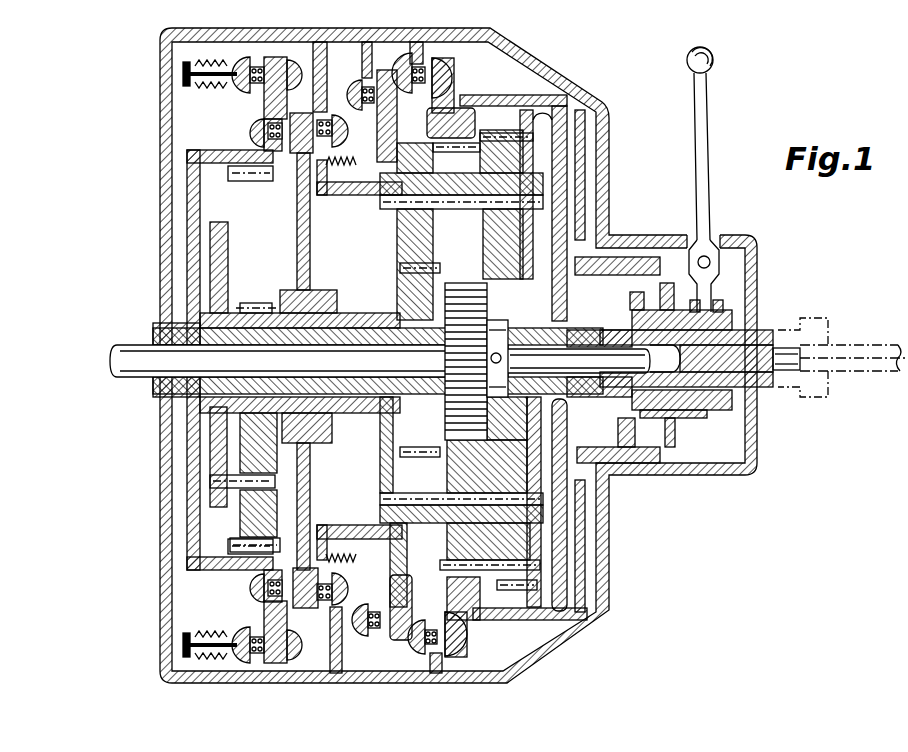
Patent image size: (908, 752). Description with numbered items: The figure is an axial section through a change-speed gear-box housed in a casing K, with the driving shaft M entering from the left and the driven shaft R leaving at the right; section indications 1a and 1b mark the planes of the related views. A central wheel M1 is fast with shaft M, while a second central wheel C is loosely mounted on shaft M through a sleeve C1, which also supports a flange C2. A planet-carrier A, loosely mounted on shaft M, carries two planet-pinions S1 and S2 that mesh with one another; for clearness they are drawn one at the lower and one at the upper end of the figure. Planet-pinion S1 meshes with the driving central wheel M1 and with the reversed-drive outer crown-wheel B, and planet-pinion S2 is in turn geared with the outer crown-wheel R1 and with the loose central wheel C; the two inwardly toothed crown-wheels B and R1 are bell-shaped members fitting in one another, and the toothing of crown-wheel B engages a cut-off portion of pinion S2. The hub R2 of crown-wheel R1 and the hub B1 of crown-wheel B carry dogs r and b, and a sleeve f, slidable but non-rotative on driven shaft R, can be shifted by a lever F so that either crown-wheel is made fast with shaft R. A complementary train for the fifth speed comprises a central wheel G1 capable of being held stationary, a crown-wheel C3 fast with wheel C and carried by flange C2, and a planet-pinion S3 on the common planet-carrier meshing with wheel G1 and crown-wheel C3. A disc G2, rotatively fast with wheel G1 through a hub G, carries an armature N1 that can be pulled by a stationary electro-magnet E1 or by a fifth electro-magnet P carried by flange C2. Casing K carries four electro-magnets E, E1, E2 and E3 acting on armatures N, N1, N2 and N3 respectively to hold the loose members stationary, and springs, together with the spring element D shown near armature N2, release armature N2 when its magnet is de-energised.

The casing K is at (545, 72).
The flange C2 is at (187, 162).
The crown-wheel C3 is at (252, 182).
The electro-magnet E is at (246, 68).
The armature N is at (294, 72).
The electro-magnet P is at (253, 125).
The armature N1 is at (298, 121).
The disc G2 is at (297, 218).
The electro-magnet E1 is at (345, 128).
The spring D is at (346, 168).
The electro-magnet E2 is at (360, 91).
The armature N2 is at (390, 72).
The armature N3 is at (447, 76).
The electro-magnet E3 is at (428, 110).
The section line 1a is at (433, 62).
The section line 1b is at (247, 127).
The crown-wheel B is at (518, 95).
The crown-wheel R1 is at (541, 104).
The planet-pinion S2 is at (512, 162).
The planet-pinion S1 is at (515, 461).
The planet-pinion S3 is at (240, 520).
The planet-carrier A is at (216, 241).
The hub G is at (350, 310).
The central wheel G1 is at (256, 298).
The sleeve C1 is at (362, 414).
The driving shaft M is at (130, 347).
The central wheel C is at (442, 286).
The central wheel M1 is at (490, 300).
The hub B1 is at (646, 257).
The hub R2 is at (594, 280).
The dogs r is at (628, 294).
The clutch tooth a is at (652, 302).
The dogs b is at (678, 284).
The sleeve f is at (684, 415).
The driven shaft R is at (812, 318).
The lever F is at (694, 152).